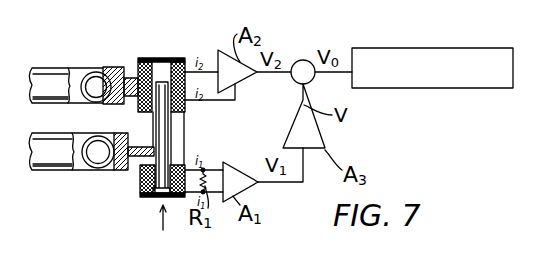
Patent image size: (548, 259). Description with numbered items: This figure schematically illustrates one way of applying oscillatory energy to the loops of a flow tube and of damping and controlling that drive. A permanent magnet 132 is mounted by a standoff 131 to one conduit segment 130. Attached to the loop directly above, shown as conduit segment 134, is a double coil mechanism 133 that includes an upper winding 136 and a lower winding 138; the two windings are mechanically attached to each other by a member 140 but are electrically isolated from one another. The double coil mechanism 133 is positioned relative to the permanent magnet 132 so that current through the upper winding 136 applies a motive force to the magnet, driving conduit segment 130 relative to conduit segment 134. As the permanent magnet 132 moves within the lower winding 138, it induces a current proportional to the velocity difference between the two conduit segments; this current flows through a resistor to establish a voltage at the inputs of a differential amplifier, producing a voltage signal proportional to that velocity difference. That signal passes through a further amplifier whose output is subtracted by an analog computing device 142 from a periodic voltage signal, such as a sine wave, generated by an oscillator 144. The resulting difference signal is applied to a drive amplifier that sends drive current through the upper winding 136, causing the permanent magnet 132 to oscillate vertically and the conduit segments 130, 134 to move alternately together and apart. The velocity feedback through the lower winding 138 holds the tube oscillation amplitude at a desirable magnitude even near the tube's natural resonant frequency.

The conduit segment 130 is at (83, 170).
The standoff 131 is at (120, 170).
The permanent magnet 132 is at (153, 130).
The double coil mechanism 133 is at (163, 230).
The conduit segment 134 is at (78, 68).
The upper winding 136 is at (180, 58).
The lower winding 138 is at (152, 197).
The member 140 is at (183, 131).
The analog computing device 142 is at (301, 85).
The oscillator 144 is at (383, 48).